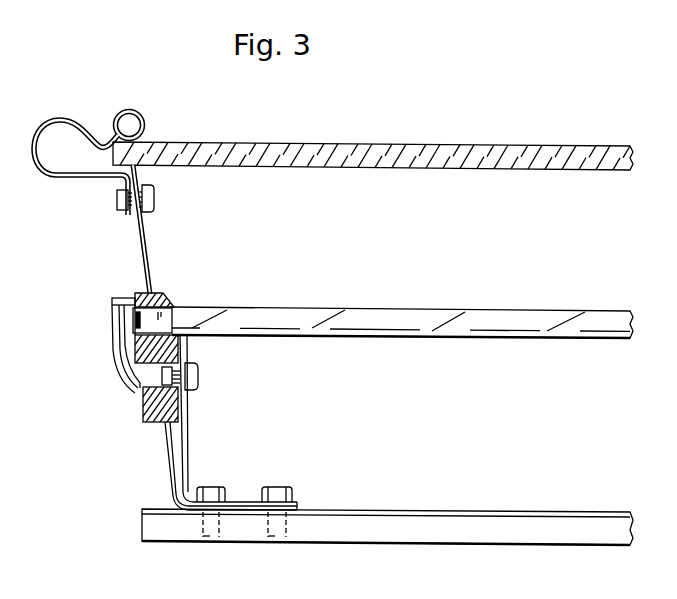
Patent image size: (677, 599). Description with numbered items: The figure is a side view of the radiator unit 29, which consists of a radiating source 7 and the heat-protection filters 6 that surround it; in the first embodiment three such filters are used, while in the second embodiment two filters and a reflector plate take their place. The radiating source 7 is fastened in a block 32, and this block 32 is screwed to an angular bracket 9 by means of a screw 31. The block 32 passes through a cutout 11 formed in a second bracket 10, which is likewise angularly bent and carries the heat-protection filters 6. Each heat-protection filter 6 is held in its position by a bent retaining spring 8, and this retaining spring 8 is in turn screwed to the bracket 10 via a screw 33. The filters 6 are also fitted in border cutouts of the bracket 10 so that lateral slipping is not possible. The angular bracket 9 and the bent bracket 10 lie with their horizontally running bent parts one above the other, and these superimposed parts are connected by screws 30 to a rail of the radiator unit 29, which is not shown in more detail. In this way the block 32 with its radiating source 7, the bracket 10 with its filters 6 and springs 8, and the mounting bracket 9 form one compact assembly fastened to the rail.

The heat-protection filter 6 is at (473, 151).
The radiating source 7 is at (472, 319).
The bent retaining spring 8 is at (80, 177).
The angular bracket 9 is at (186, 451).
The bracket 10 is at (168, 453).
The cutout 11 is at (147, 257).
The radiator unit 29 is at (578, 128).
The screws 30 is at (276, 489).
The screw 31 is at (200, 377).
The block 32 is at (145, 405).
The screw 33 is at (157, 196).